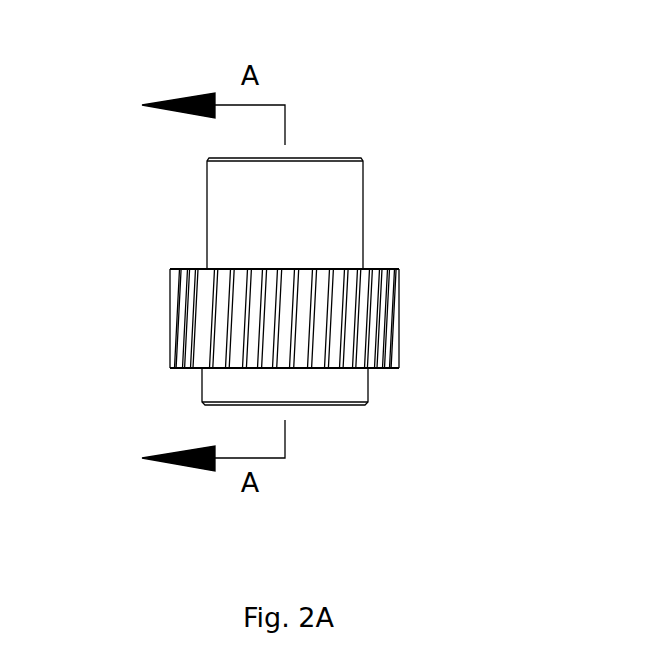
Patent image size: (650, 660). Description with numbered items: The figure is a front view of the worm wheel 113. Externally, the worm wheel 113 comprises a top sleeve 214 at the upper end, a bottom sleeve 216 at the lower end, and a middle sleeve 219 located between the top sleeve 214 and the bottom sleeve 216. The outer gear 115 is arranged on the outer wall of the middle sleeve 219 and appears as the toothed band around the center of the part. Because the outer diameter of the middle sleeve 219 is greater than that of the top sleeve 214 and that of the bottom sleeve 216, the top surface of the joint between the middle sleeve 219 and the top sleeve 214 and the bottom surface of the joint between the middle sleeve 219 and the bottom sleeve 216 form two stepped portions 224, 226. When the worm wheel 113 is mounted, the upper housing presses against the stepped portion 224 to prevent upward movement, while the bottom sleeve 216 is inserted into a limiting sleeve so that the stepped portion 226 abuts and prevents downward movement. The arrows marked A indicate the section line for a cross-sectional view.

The worm wheel 113 is at (322, 225).
The top sleeve 214 is at (353, 217).
The outer gear 115 is at (322, 305).
The stepped portion 224 is at (190, 268).
The middle sleeve 219 is at (180, 312).
The stepped portion 226 is at (186, 369).
The bottom sleeve 216 is at (362, 388).